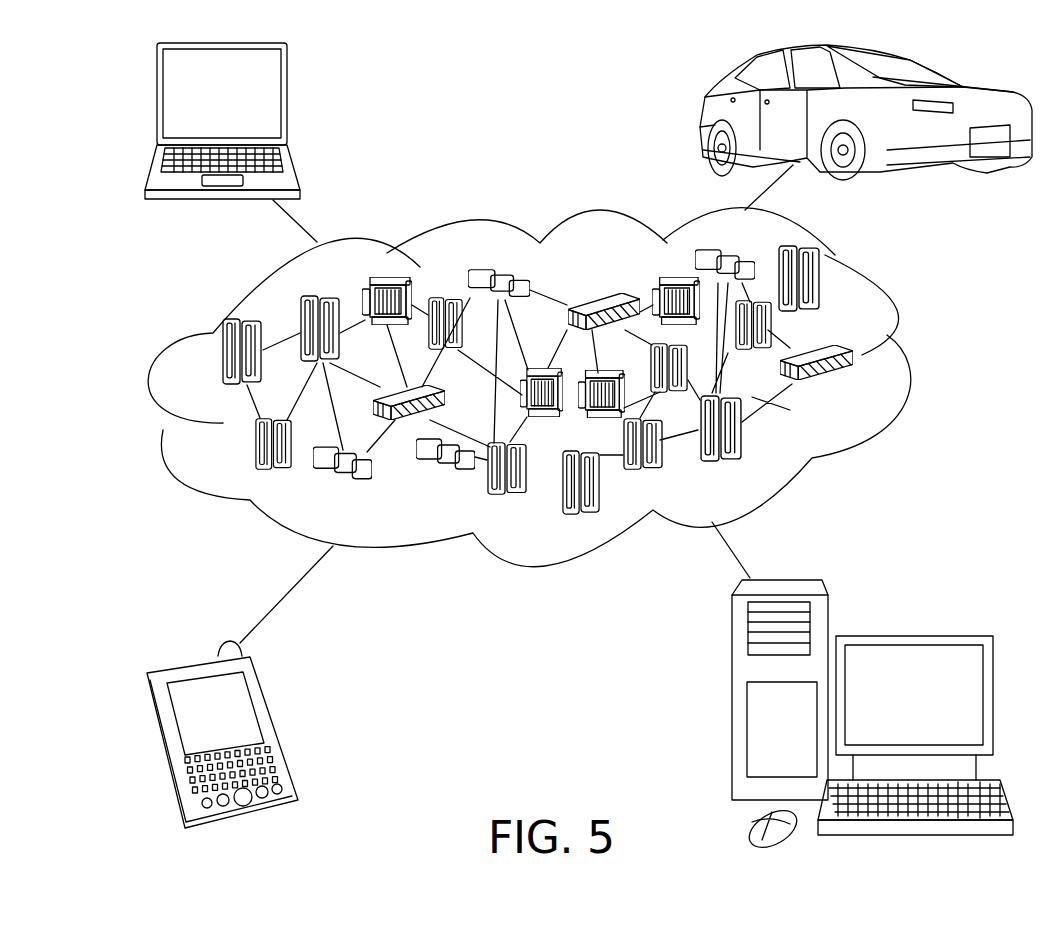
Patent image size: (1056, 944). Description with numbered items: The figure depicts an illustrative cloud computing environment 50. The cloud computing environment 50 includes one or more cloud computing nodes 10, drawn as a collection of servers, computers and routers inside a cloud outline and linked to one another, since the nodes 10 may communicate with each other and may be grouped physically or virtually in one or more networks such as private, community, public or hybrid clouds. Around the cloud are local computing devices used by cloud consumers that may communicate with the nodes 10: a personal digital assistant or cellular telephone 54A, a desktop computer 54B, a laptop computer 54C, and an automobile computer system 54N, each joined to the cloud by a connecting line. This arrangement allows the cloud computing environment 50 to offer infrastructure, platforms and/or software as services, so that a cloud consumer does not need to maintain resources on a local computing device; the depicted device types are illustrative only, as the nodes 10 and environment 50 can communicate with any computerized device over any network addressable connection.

The cloud computing environment 50 is at (912, 358).
The cloud computing node 10 is at (862, 392).
The personal digital assistant or cellular telephone 54A is at (283, 724).
The desktop computer 54B is at (910, 634).
The laptop computer 54C is at (290, 100).
The automobile computer system 54N is at (703, 118).